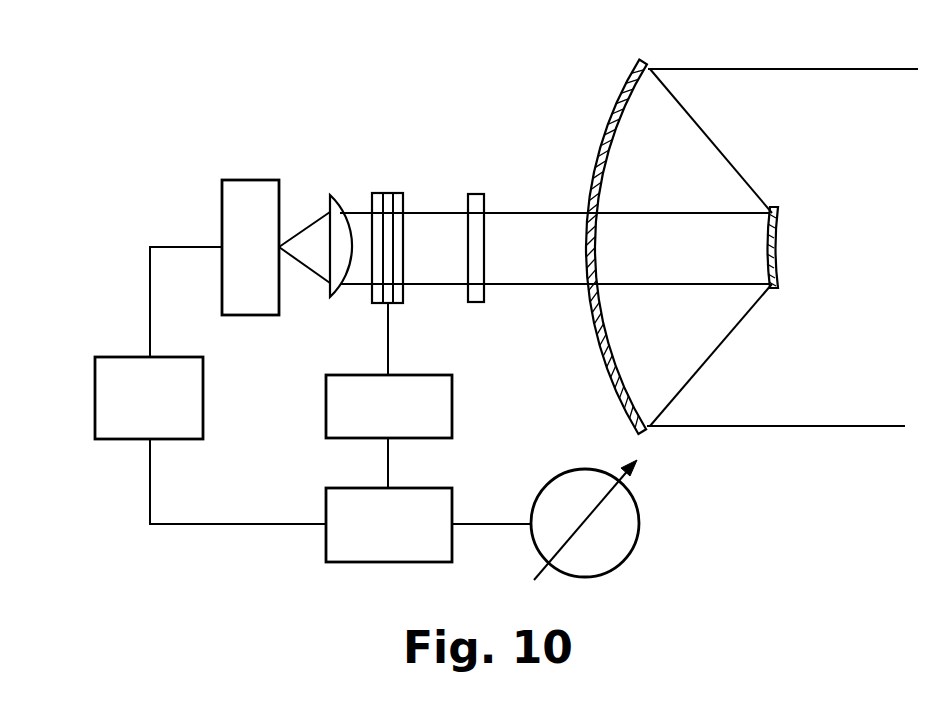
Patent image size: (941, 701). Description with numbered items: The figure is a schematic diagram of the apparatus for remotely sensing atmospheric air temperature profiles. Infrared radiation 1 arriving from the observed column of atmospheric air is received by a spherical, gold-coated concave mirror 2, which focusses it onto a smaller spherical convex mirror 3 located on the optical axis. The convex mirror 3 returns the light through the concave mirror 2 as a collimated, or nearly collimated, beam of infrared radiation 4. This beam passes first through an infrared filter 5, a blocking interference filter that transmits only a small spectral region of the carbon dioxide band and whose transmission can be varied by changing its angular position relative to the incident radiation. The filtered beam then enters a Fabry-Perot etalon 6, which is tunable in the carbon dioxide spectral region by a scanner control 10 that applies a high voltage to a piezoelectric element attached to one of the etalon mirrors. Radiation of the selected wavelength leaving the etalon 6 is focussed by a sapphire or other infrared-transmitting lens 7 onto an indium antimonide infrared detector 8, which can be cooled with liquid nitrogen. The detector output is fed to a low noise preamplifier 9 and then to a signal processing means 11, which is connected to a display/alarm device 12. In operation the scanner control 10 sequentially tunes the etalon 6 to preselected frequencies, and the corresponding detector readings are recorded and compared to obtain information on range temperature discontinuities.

The infrared radiation 1 is at (797, 69).
The concave mirror 2 is at (622, 90).
The convex mirror 3 is at (777, 222).
The beam of collimated infrared radiation 4 is at (515, 213).
The infrared filter 5 is at (480, 193).
The Fabry-Perot etalon 6 is at (400, 193).
The lens 7 is at (338, 205).
The infrared detector 8 is at (249, 180).
The low noise preamplifier 9 is at (203, 392).
The scanner control 10 is at (452, 403).
The signal processing means 11 is at (375, 562).
The display/alarm device 12 is at (641, 523).